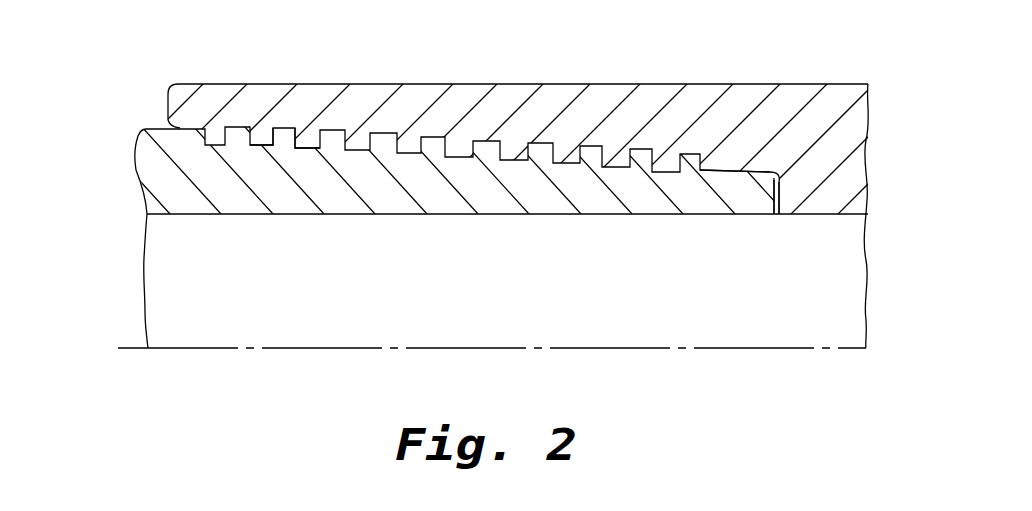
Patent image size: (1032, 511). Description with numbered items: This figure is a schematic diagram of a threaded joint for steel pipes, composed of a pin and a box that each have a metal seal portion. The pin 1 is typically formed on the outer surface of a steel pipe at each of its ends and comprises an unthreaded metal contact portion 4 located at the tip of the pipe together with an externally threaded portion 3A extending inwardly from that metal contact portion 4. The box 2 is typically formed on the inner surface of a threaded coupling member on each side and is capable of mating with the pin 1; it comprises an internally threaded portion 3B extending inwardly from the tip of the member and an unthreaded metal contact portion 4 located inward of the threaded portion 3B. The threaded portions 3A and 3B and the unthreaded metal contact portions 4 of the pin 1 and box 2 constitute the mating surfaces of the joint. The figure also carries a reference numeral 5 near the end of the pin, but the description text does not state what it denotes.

The pin 1 is at (172, 185).
The box 2 is at (490, 107).
The externally threaded portion 3A is at (265, 160).
The internally threaded portion 3B is at (308, 139).
The unthreaded metal contact portion 4 is at (733, 165).
The gap 5 is at (783, 192).